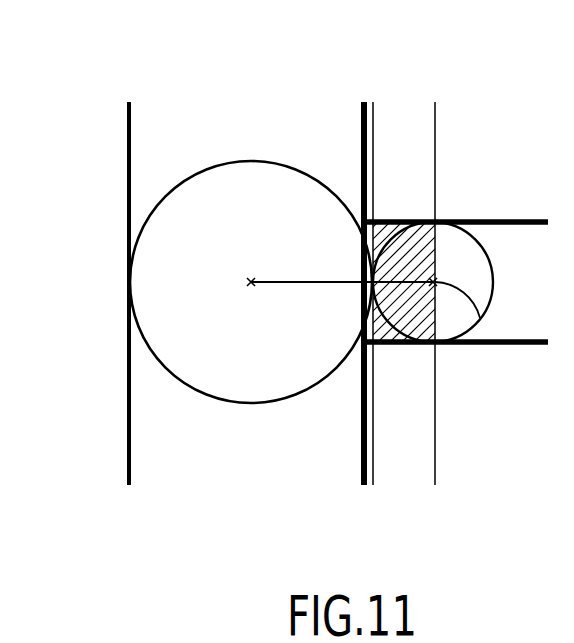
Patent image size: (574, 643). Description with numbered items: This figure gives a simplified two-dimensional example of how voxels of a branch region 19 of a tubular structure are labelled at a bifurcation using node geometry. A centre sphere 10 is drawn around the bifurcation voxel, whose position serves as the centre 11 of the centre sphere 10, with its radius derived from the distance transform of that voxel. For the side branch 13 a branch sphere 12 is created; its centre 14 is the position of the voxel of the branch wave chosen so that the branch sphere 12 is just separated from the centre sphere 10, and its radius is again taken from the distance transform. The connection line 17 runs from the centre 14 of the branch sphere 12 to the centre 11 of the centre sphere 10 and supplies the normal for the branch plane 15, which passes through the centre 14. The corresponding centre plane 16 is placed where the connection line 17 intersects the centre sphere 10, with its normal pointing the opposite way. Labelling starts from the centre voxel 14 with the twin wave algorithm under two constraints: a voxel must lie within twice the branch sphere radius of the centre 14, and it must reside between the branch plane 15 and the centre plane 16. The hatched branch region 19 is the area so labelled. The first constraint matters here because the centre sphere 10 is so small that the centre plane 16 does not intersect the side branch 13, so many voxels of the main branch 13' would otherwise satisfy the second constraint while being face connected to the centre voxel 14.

The main branch 13' is at (74, 293).
The centre sphere 10 is at (155, 208).
The centre of the centre sphere 11 is at (251, 282).
The normal / connection line 17 is at (333, 283).
The centre plane 16 is at (375, 113).
The branch plane 15 is at (437, 113).
The branch 13 is at (459, 326).
The branch sphere 12 is at (485, 247).
The branch region 19 is at (382, 222).
The centre of the branch sphere 14 is at (480, 318).